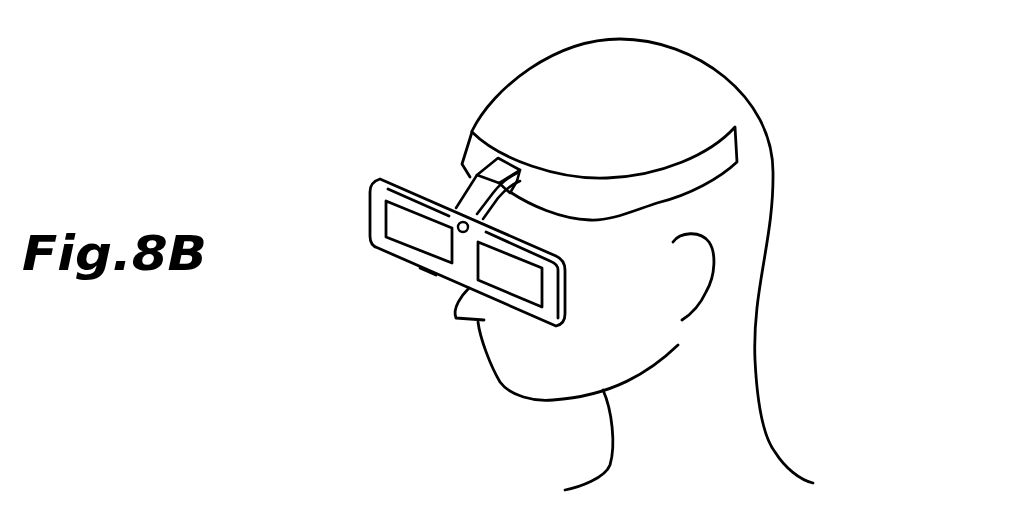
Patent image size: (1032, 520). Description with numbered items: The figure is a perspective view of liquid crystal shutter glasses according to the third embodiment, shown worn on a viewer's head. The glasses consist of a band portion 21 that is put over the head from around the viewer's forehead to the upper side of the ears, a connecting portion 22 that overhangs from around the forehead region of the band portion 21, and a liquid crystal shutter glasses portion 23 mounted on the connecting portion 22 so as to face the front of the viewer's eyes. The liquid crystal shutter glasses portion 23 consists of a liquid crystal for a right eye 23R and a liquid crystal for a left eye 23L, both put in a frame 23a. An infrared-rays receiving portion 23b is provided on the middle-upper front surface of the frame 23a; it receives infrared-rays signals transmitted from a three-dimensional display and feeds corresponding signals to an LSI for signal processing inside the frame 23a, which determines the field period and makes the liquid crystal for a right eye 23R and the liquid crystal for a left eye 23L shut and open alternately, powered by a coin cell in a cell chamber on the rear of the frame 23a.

The band portion 21 is at (722, 157).
The connecting portion 22 is at (477, 193).
The liquid crystal shutter glasses portion 23 is at (378, 250).
The liquid crystal for a right eye 23R is at (399, 233).
The liquid crystal for a left eye 23L is at (532, 281).
The frame 23a is at (428, 266).
The infrared-rays receiving portion 23b is at (460, 233).